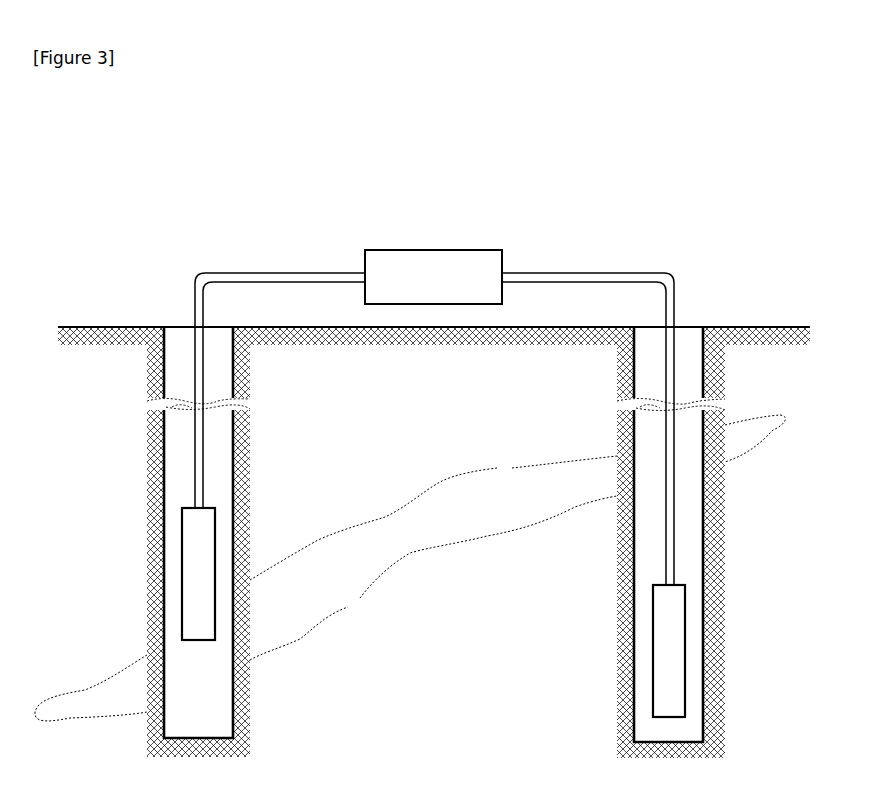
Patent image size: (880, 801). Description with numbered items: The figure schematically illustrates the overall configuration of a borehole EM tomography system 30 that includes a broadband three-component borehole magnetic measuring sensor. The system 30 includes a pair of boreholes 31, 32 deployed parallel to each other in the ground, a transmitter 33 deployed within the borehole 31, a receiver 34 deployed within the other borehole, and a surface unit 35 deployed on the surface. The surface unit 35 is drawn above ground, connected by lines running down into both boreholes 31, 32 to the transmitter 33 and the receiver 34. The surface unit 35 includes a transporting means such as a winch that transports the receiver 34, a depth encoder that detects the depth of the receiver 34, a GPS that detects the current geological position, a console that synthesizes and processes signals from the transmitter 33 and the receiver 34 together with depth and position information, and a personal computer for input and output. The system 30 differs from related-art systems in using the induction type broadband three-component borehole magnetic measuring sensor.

The borehole EM tomography system 30 is at (446, 414).
The borehole 31 is at (250, 452).
The borehole 32 is at (630, 433).
The transmitter 33 is at (218, 537).
The receiver 34 is at (655, 610).
The surface unit 35 is at (431, 265).